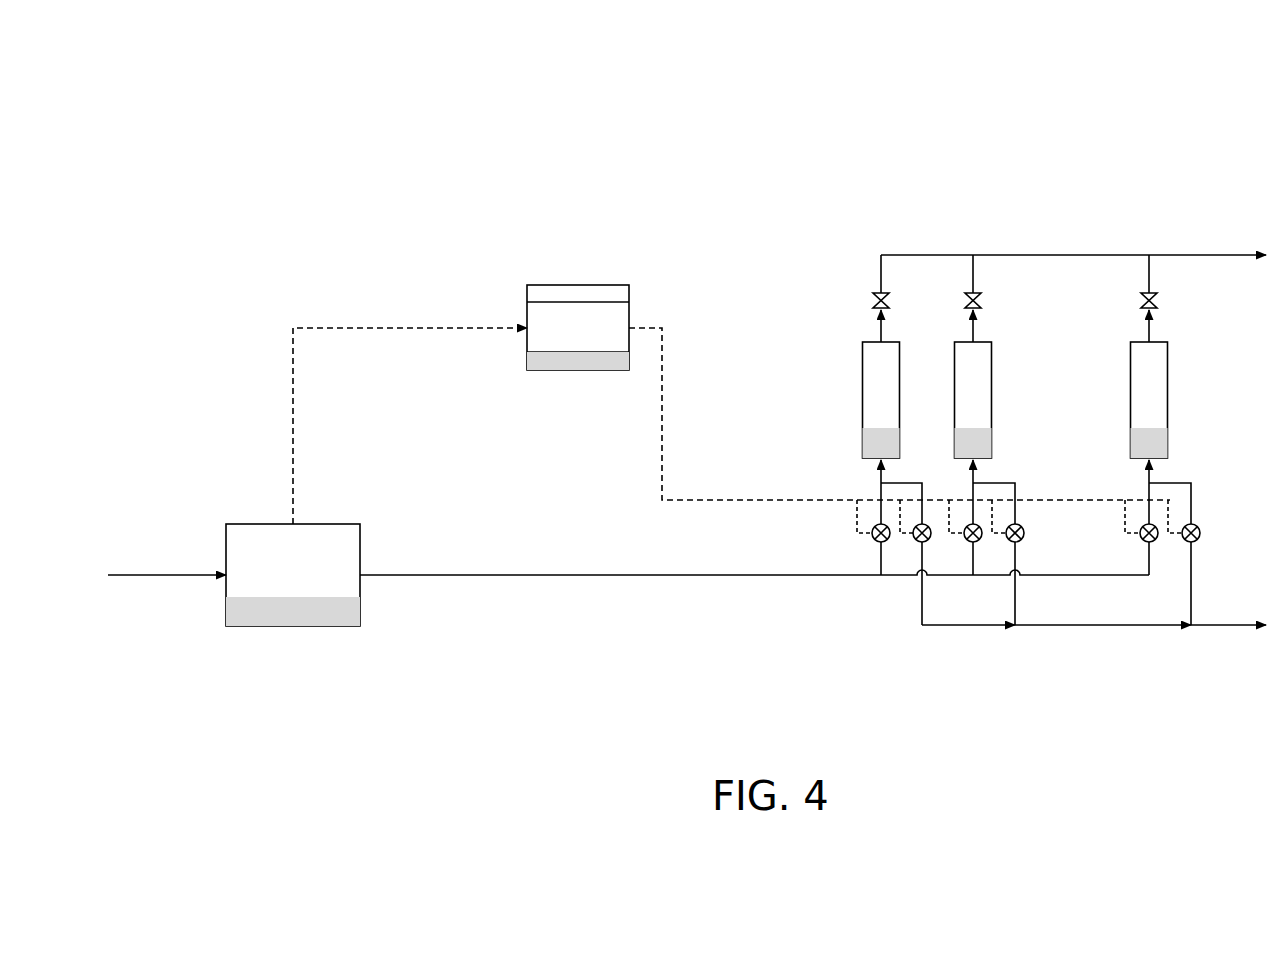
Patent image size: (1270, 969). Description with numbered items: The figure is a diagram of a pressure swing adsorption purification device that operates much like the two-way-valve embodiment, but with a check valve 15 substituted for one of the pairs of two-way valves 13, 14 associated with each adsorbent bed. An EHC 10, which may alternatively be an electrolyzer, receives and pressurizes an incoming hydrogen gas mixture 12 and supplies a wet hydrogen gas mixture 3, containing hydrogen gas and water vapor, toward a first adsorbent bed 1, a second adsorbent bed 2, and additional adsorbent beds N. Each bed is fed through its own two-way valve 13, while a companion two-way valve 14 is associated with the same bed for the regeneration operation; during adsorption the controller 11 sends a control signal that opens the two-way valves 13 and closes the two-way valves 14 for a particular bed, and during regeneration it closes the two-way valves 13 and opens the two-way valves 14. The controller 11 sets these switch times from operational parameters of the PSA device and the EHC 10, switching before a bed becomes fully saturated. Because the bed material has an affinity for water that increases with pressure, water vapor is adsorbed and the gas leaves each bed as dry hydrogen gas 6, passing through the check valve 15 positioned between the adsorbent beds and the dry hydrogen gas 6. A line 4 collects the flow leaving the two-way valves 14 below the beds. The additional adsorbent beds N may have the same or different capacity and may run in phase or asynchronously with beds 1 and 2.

The first adsorbent bed 1 is at (881, 400).
The second adsorbent bed 2 is at (973, 400).
The additional adsorbent beds N is at (1149, 400).
The hydrogen gas mixture 3 is at (515, 575).
The bypass/outlet line 4 is at (1108, 628).
The dry hydrogen gas 6 is at (1137, 254).
The EHC 10 is at (290, 627).
The controller 11 is at (568, 372).
The hydrogen gas mixture 12 is at (154, 575).
The two-way valves 13 is at (875, 540).
The two-way valves 14 is at (916, 540).
The check valve 15 is at (873, 300).